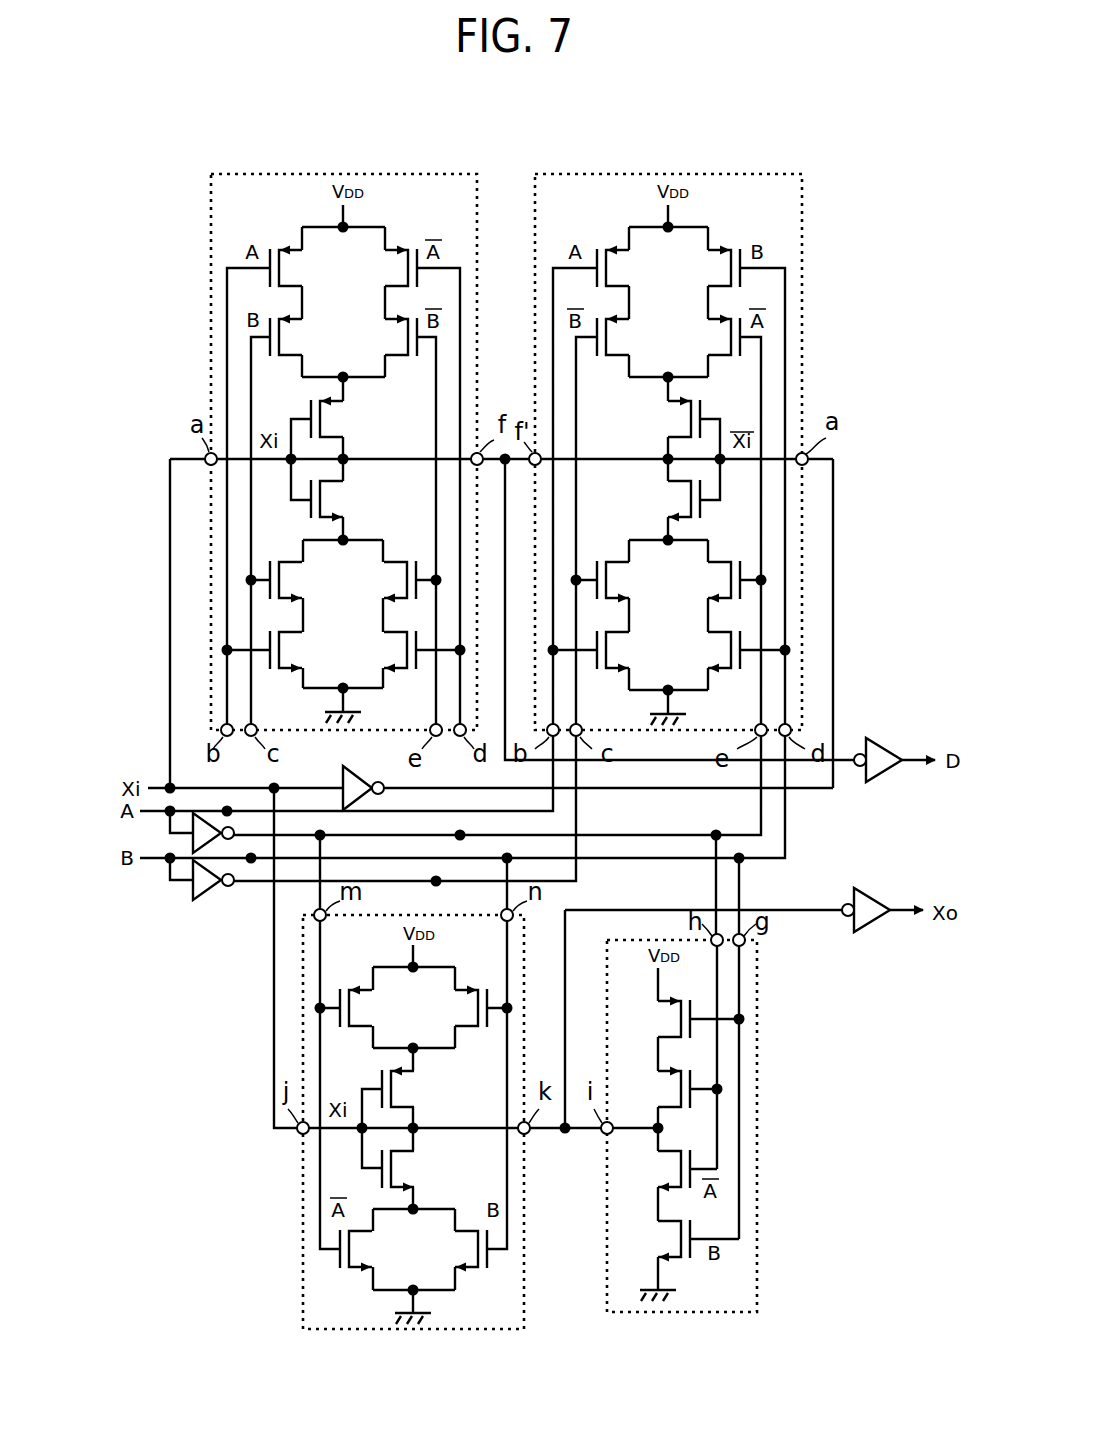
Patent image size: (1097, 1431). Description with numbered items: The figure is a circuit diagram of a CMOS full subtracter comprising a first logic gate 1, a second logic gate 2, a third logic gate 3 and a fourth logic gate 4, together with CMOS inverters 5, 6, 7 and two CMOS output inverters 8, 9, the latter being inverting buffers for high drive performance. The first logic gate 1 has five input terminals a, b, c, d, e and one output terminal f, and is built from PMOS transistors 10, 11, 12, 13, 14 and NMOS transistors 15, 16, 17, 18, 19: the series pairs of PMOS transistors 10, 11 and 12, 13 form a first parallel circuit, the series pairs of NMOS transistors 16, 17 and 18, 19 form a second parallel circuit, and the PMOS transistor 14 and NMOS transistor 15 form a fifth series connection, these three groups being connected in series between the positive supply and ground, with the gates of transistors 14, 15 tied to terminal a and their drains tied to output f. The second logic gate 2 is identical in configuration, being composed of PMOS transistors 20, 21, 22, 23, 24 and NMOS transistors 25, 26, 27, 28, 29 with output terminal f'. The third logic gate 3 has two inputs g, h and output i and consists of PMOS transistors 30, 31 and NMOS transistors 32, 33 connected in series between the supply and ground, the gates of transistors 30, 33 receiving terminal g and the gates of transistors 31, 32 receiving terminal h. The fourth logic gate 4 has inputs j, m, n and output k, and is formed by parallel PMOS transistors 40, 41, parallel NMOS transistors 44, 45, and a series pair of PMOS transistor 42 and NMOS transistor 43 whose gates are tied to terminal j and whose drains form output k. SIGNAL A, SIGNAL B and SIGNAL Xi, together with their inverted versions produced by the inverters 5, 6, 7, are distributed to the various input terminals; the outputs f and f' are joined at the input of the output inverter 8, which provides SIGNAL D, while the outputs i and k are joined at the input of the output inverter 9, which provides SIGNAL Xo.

The first logic gate 1 is at (477, 268).
The second logic gate 2 is at (802, 268).
The third logic gate 3 is at (757, 1058).
The fourth logic gate 4 is at (524, 1205).
The CMOS inverter 5 is at (358, 772).
The CMOS inverter 6 is at (192, 844).
The CMOS inverter 7 is at (202, 898).
The CMOS output inverter 8 is at (878, 744).
The CMOS output inverter 9 is at (868, 894).
The PMOS transistor 10 is at (288, 286).
The PMOS transistor 11 is at (288, 355).
The PMOS transistor 12 is at (396, 283).
The PMOS transistor 13 is at (396, 353).
The PMOS transistor 14 is at (330, 432).
The NMOS transistor 15 is at (330, 490).
The NMOS transistor 16 is at (288, 563).
The NMOS transistor 17 is at (288, 633).
The NMOS transistor 18 is at (396, 565).
The NMOS transistor 19 is at (396, 635).
The PMOS transistor 20 is at (611, 288).
The PMOS transistor 21 is at (611, 357).
The PMOS transistor 22 is at (719, 283).
The PMOS transistor 23 is at (719, 353).
The PMOS transistor 24 is at (673, 433).
The NMOS transistor 25 is at (673, 490).
The NMOS transistor 26 is at (612, 563).
The NMOS transistor 27 is at (612, 633).
The NMOS transistor 28 is at (719, 567).
The NMOS transistor 29 is at (719, 637).
The PMOS transistor 30 is at (668, 1038).
The PMOS transistor 31 is at (668, 1108).
The NMOS transistor 32 is at (668, 1160).
The NMOS transistor 33 is at (668, 1230).
The PMOS transistor 40 is at (361, 1021).
The PMOS transistor 41 is at (468, 1022).
The PMOS transistor 42 is at (400, 1105).
The NMOS transistor 43 is at (401, 1156).
The NMOS transistor 44 is at (358, 1233).
The NMOS transistor 45 is at (468, 1235).